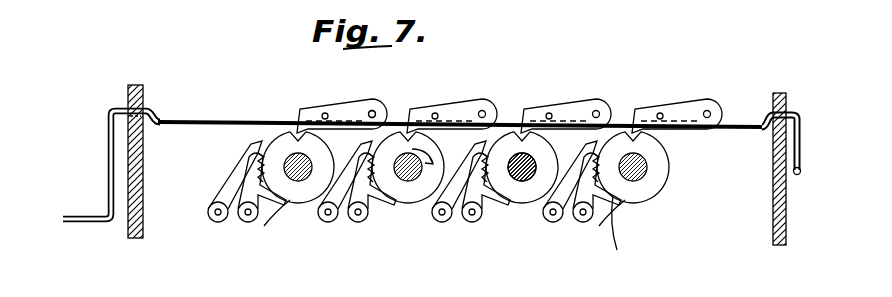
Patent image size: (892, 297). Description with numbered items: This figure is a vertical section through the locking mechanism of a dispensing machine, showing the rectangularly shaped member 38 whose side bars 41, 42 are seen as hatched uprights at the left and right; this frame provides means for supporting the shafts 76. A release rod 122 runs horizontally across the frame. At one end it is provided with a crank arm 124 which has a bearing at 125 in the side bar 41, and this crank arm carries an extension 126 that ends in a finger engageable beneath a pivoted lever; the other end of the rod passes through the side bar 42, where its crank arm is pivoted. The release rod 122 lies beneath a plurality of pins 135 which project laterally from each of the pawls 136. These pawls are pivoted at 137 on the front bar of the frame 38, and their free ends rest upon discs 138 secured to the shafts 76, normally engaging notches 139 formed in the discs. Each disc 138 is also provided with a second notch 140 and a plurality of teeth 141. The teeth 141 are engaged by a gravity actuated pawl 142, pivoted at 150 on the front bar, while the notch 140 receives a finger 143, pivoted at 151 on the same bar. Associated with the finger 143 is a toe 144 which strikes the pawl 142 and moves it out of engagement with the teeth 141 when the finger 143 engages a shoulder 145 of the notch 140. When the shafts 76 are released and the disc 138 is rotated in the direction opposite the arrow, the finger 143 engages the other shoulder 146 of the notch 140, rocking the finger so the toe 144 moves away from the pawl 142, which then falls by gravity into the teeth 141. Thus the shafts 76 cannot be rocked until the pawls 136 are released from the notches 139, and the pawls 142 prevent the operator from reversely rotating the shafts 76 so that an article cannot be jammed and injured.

The rectangularly shaped member 38 is at (764, 191).
The side bar 41 is at (143, 210).
The side bar 42 is at (773, 213).
The shaft 76 is at (514, 192).
The release rod 122 is at (196, 119).
The crank arm 124 is at (156, 112).
The bearing 125 is at (137, 118).
The extension 126 is at (108, 150).
The pin 135 is at (323, 113).
The pawl 136 is at (349, 108).
The pivot 137 is at (376, 111).
The disc 138 is at (310, 194).
The notch 139 is at (486, 151).
The second notch 140 is at (621, 190).
The teeth 141 is at (594, 153).
The gravity actuated pawl 142 is at (233, 176).
The finger 143 is at (380, 217).
The toe 144 is at (246, 181).
The shoulder 145 is at (303, 199).
The shoulder 146 is at (375, 206).
The pivot 150 is at (466, 204).
The pivot 151 is at (470, 225).